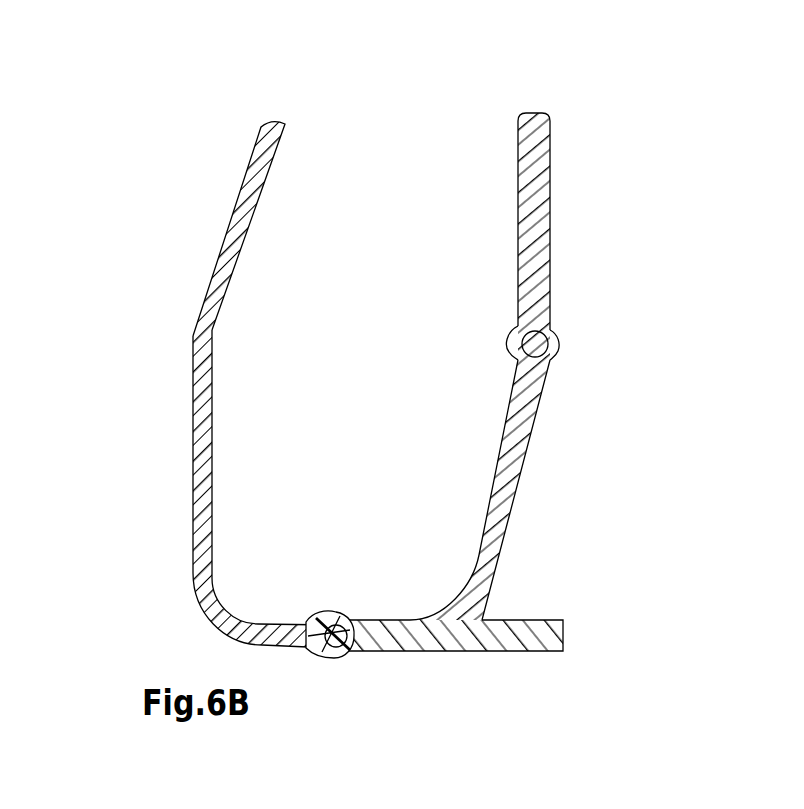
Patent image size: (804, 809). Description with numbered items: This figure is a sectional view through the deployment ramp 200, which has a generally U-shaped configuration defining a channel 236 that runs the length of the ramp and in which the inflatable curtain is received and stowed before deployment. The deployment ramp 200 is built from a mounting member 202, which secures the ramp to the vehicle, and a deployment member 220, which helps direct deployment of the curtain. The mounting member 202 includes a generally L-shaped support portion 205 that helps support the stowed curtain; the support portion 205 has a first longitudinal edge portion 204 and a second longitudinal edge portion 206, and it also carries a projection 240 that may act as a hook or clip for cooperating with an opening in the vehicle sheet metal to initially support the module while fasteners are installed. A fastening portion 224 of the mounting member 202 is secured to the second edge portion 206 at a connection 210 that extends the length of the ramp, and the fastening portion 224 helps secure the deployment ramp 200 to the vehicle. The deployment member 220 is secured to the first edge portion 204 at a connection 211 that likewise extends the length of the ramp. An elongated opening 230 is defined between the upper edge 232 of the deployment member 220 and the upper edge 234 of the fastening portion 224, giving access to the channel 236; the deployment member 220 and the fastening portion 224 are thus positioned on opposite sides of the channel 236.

The deployment ramp 200 is at (130, 273).
The mounting member 202 is at (595, 341).
The first longitudinal edge portion 204 is at (337, 638).
The support portion 205 is at (535, 447).
The second longitudinal edge portion 206 is at (553, 360).
The connection 210 is at (555, 332).
The connection 211 is at (336, 658).
The deployment member 220 is at (236, 135).
The fastening portion 224 is at (552, 167).
The elongated opening 230 is at (406, 137).
The upper edge 232 is at (273, 128).
The upper edge 234 is at (535, 114).
The channel 236 is at (285, 406).
The projection 240 is at (547, 634).